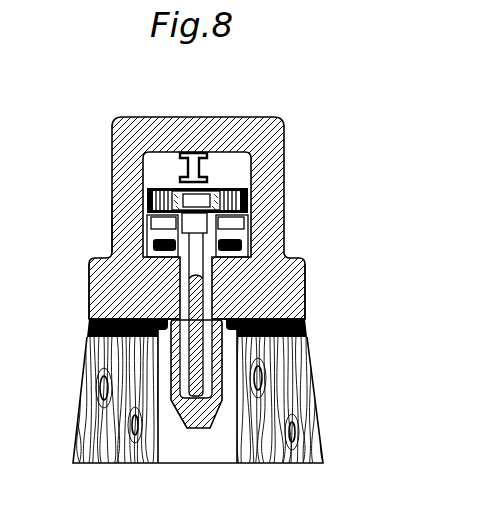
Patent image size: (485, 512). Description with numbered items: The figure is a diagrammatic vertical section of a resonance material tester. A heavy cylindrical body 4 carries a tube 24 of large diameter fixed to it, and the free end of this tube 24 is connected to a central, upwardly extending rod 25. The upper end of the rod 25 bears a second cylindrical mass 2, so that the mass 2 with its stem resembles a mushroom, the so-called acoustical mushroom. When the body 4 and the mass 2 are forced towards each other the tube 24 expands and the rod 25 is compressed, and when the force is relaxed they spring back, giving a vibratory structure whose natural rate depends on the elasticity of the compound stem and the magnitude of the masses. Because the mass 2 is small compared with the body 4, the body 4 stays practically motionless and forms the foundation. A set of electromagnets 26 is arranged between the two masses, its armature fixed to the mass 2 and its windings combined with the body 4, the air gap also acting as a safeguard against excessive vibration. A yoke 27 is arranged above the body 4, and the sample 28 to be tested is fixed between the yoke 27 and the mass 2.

The cylindrical mass 2 is at (147, 200).
The heavy cylindrical body 4 is at (288, 298).
The tube 24 is at (210, 417).
The rod 25 is at (188, 388).
The electromagnets 26 is at (111, 237).
The yoke 27 is at (273, 213).
The sample 28 is at (207, 166).